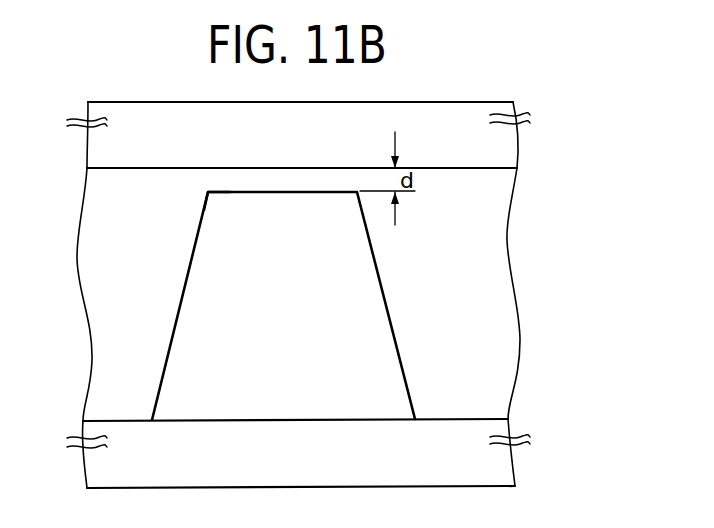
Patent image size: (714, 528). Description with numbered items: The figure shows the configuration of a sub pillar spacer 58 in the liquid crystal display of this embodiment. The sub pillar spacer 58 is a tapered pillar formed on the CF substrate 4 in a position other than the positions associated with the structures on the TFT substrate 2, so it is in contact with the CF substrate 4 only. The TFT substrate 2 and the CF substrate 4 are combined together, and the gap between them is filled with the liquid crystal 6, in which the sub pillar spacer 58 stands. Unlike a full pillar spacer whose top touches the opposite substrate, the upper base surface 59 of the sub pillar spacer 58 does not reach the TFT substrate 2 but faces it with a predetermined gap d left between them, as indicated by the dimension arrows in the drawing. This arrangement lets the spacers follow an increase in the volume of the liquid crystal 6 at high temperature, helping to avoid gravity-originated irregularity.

The TFT substrate 2 is at (500, 141).
The CF substrate 4 is at (500, 466).
The liquid crystal 6 is at (500, 296).
The sub pillar spacer 58 is at (382, 335).
The upper base surface 59 is at (221, 192).